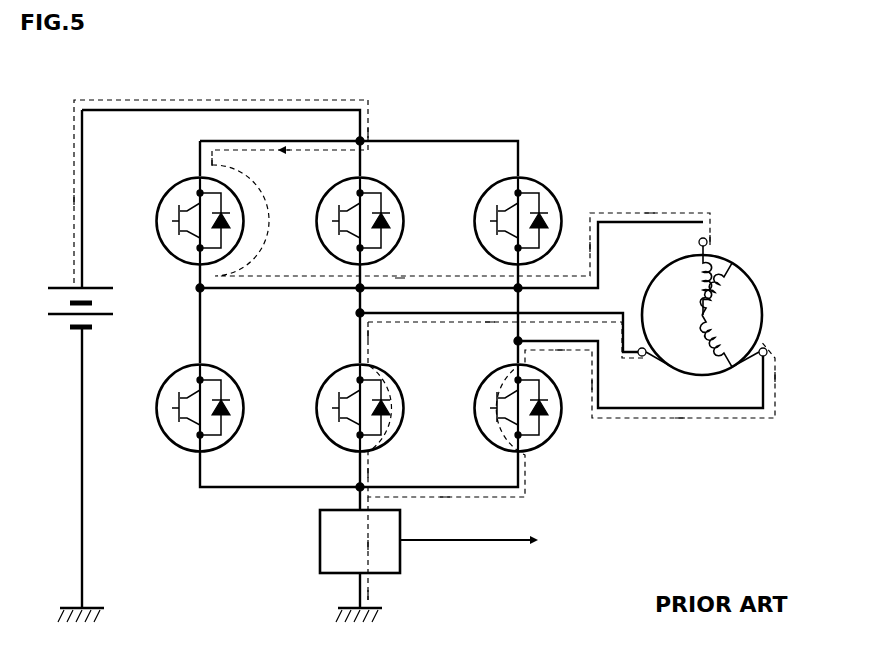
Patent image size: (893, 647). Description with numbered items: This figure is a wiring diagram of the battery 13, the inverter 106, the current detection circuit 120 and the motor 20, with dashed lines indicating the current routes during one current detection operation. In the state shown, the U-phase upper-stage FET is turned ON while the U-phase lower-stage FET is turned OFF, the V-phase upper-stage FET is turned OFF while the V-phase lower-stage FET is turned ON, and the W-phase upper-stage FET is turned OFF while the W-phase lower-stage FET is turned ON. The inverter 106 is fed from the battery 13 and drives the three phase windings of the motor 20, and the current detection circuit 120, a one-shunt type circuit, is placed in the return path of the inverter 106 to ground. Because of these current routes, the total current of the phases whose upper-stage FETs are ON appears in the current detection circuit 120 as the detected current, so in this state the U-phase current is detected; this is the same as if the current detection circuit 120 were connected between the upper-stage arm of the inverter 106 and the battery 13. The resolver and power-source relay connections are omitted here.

The battery 13 is at (103, 279).
The inverter 106 is at (556, 156).
The motor 20 is at (734, 263).
The current detection circuit 120 is at (320, 523).